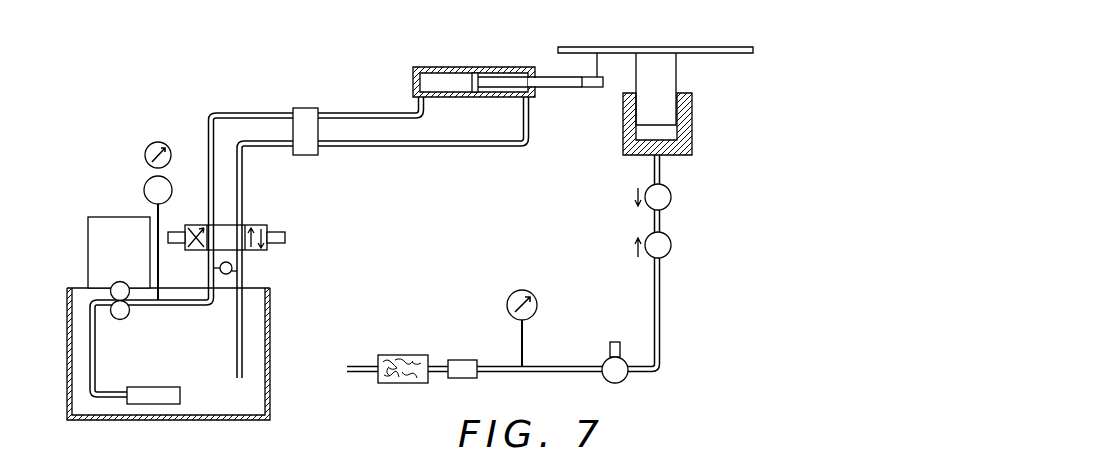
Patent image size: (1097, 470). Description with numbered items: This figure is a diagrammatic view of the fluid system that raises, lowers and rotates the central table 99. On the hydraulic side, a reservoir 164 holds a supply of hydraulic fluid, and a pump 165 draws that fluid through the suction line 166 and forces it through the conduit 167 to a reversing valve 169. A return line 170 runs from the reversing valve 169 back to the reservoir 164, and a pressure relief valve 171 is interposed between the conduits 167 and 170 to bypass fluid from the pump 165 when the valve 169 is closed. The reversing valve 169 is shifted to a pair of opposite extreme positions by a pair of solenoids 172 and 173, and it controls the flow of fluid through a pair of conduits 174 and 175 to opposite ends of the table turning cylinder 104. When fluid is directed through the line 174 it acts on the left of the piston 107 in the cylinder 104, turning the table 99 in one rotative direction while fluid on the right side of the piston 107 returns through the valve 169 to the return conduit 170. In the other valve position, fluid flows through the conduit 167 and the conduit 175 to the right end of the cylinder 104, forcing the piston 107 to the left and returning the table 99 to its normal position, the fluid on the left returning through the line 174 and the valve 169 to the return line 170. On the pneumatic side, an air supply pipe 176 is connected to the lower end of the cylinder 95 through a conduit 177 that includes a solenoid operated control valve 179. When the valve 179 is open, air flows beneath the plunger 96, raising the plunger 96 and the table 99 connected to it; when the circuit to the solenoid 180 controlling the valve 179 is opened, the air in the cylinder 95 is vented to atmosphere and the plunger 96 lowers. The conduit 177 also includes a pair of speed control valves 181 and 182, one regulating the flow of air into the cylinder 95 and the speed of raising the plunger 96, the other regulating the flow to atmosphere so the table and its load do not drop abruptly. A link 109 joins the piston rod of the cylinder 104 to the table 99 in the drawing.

The cylinder 95 is at (687, 125).
The plunger 96 is at (667, 80).
The table 99 is at (645, 22).
The cylinder 104 is at (432, 67).
The piston 107 is at (477, 92).
The connecting rod link 109 is at (547, 78).
The reservoir 164 is at (67, 348).
The pump 165 is at (112, 290).
The suction line 166 is at (90, 387).
The conduit 167 is at (182, 300).
The reversing valve 169 is at (234, 233).
The return line 170 is at (241, 319).
The pressure relief valve 171 is at (232, 277).
The solenoid 172 is at (287, 237).
The solenoid 173 is at (176, 232).
The conduit 174 is at (278, 113).
The conduit 175 is at (357, 147).
The air supply pipe 176 is at (362, 367).
The conduit 177 is at (663, 348).
The solenoid operated control valve 179 is at (621, 382).
The solenoid 180 is at (625, 318).
The speed control valve 181 is at (669, 195).
The speed control valve 182 is at (671, 245).